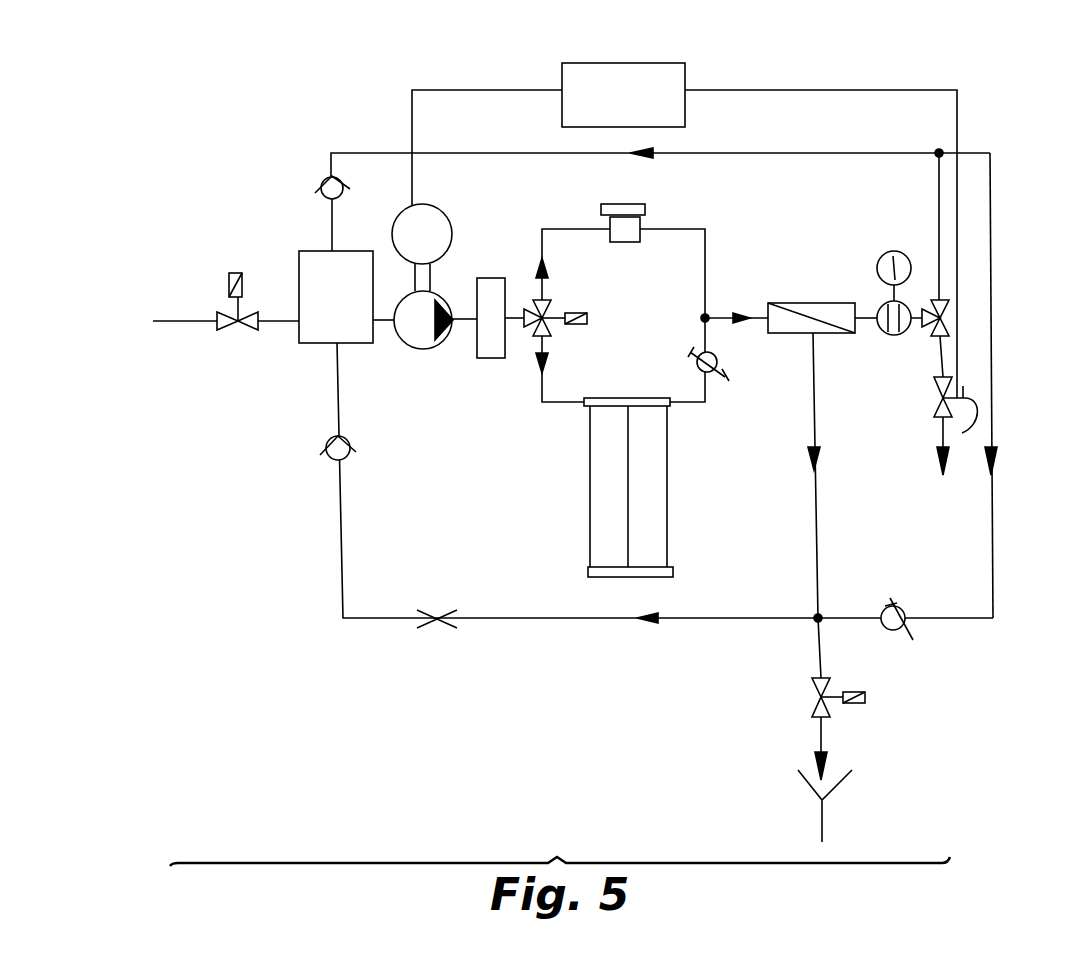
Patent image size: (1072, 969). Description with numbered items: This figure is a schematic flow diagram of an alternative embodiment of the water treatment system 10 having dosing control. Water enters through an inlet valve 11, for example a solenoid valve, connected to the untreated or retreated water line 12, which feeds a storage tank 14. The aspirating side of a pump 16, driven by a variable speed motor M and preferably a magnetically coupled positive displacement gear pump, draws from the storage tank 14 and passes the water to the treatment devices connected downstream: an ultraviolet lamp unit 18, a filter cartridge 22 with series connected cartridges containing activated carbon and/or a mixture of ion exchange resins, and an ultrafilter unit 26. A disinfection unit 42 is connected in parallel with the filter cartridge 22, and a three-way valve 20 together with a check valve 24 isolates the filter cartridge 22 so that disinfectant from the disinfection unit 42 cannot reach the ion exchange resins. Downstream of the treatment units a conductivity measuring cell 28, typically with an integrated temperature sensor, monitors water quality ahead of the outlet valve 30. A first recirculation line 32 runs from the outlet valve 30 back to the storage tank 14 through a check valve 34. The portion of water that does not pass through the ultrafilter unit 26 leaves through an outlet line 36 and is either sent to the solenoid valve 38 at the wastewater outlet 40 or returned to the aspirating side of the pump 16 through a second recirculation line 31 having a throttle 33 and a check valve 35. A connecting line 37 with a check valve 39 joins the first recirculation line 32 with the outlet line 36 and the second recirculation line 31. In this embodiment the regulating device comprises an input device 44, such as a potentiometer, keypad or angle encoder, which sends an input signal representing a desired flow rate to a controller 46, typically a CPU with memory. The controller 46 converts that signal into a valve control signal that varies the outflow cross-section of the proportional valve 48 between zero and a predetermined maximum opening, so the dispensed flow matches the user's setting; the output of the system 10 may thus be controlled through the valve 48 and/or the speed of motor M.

The water treatment system 10 is at (278, 481).
The inlet valve 11 is at (227, 312).
The water line 12 is at (190, 321).
The storage tank 14 is at (310, 333).
The pump 16 is at (413, 328).
The ultraviolet lamp unit 18 is at (487, 286).
The three-way valve 20 is at (538, 322).
The filter cartridge 22 is at (663, 513).
The check valve 24 is at (725, 377).
The ultrafilter unit 26 is at (783, 315).
The conductivity measuring cell 28 is at (880, 335).
The outlet valve 30 is at (942, 298).
The second recirculation line 31 is at (580, 619).
The first recirculation line 32 is at (773, 153).
The throttle 33 is at (438, 624).
The check valve 34 is at (351, 195).
The check valve 35 is at (354, 450).
The outlet line 36 is at (818, 537).
The connecting line 37 is at (990, 407).
The solenoid valve 38 is at (813, 686).
The check valve 39 is at (910, 633).
The wastewater outlet 40 is at (803, 781).
The disinfection unit 42 is at (637, 230).
The input device 44 is at (960, 446).
The controller 46 is at (685, 74).
The proportional valve 48 is at (938, 387).